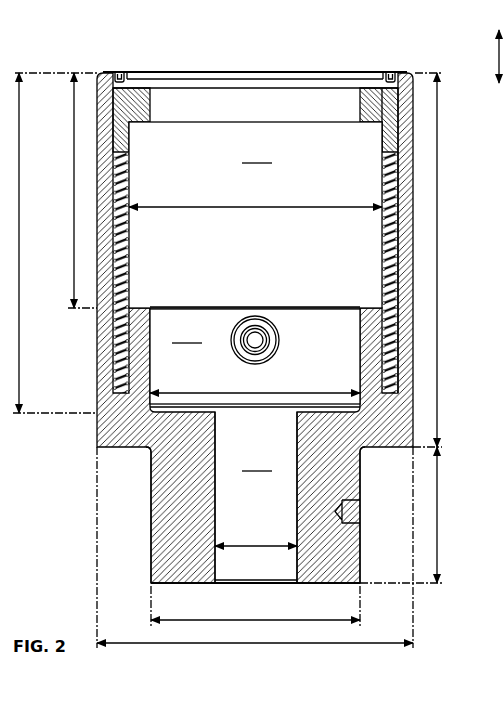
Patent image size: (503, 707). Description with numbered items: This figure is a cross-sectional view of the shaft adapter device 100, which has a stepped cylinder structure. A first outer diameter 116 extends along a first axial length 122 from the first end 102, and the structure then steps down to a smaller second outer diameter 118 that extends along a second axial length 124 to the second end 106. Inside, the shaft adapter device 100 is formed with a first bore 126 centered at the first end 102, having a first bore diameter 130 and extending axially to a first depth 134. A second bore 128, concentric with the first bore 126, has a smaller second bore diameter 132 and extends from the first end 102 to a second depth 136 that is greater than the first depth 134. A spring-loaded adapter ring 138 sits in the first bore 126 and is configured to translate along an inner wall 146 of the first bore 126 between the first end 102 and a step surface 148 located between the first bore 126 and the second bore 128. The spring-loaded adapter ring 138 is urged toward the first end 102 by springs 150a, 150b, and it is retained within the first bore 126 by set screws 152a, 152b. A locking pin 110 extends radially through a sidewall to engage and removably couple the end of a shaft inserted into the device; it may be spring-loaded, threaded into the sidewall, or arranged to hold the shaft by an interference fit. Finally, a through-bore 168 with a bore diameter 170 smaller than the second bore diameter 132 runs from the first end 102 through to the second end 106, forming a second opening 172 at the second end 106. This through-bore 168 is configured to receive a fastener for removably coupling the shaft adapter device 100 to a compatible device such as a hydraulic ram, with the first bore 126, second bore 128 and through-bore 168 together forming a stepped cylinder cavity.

The shaft adapter device 100 is at (70, 46).
The first end 102 is at (280, 70).
The second end 106 is at (170, 580).
The locking pin 110 is at (277, 340).
The first outer diameter 116 is at (352, 642).
The second outer diameter 118 is at (250, 618).
The first axial length 122 is at (437, 250).
The second axial length 124 is at (437, 522).
The first bore 126 is at (255, 215).
The second bore 128 is at (255, 357).
The first bore diameter 130 is at (303, 210).
The second bore diameter 132 is at (288, 392).
The first depth 134 is at (74, 178).
The second depth 136 is at (19, 347).
The spring-loaded adapter ring 138 is at (137, 95).
The inner wall 146 is at (398, 145).
The step surface 148 is at (397, 289).
The spring 150a is at (393, 185).
The spring 150b is at (116, 250).
The set screw 152a is at (391, 73).
The set screw 152b is at (121, 72).
The through-bore 168 is at (256, 497).
The bore diameter 170 is at (262, 544).
The second opening 172 is at (279, 586).